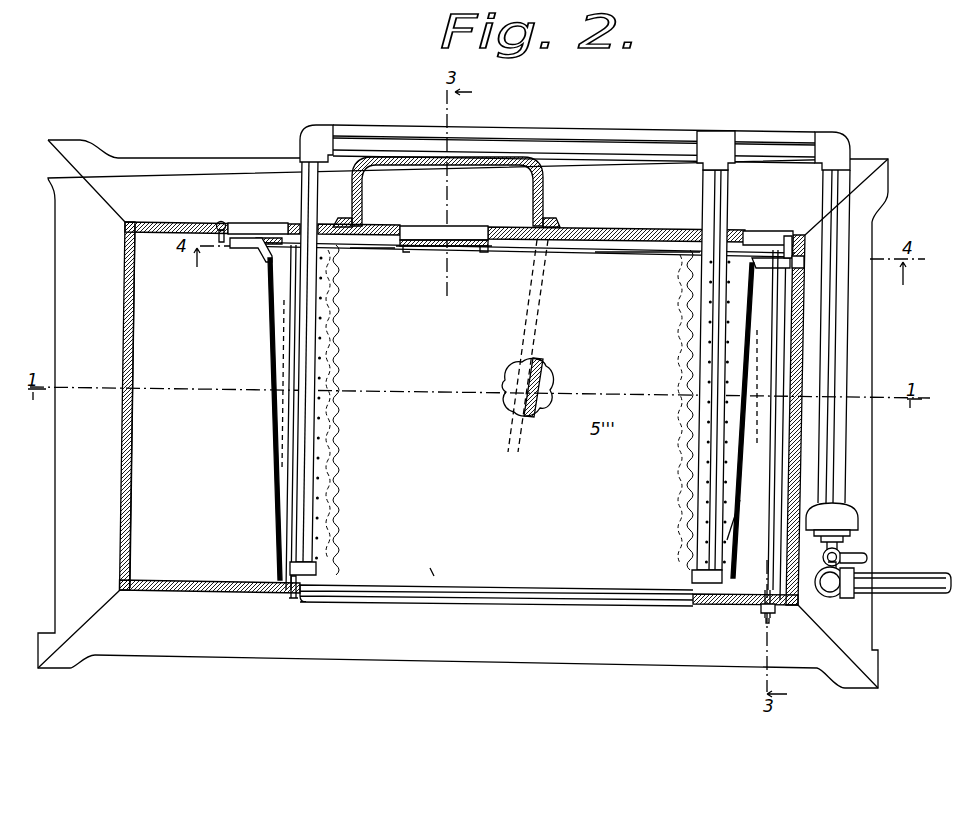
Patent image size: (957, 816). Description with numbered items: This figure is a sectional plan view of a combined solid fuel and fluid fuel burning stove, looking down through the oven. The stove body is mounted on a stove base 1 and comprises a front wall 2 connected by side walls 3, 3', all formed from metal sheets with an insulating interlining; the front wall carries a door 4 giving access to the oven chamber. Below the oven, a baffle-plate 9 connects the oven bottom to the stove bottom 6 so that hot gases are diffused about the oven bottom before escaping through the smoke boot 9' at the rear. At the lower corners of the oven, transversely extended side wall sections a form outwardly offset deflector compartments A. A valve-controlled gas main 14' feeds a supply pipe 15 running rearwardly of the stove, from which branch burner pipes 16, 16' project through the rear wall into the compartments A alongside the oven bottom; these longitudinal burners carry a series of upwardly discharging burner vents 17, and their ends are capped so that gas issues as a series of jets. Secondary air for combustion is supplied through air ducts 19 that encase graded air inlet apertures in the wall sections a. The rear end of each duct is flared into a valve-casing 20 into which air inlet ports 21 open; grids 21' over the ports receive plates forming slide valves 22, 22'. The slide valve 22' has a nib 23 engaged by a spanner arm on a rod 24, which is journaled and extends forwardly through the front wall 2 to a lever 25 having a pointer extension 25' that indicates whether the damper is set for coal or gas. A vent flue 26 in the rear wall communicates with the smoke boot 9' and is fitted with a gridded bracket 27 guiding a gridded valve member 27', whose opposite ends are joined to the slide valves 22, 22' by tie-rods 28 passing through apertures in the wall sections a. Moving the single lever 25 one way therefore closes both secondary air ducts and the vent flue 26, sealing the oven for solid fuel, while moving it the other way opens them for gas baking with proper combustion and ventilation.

The stove base 1 is at (632, 644).
The front wall 2 is at (262, 597).
The side wall 3 is at (444, 413).
The side wall 3' is at (824, 420).
The door 4 is at (517, 606).
The stove bottom 6 is at (153, 470).
The baffle-plate 9 is at (510, 346).
The smoke boot 9' is at (458, 192).
The gas main 14' is at (883, 569).
The supply pipe 15 is at (575, 128).
The branch burner pipe 16 is at (732, 370).
The branch burner pipe 16' is at (293, 361).
The burner vents 17 is at (327, 450).
The secondary air duct 19 is at (275, 446).
The valve-casing 20 is at (238, 257).
The air inlet ports 21 is at (767, 228).
The grids 21' is at (262, 213).
The slide valve 22 is at (250, 258).
The slide valve 22' is at (792, 232).
The nib 23 is at (805, 258).
The rod 24 is at (777, 305).
The lever 25 is at (785, 619).
The pointer extension 25' is at (746, 624).
The vent flue 26 is at (479, 234).
The gridded bracket 27 is at (444, 225).
The gridded valve member 27' is at (444, 266).
The tie-rods 28 is at (350, 248).
The deflector compartments A is at (293, 372).
The side wall sections a is at (287, 412).